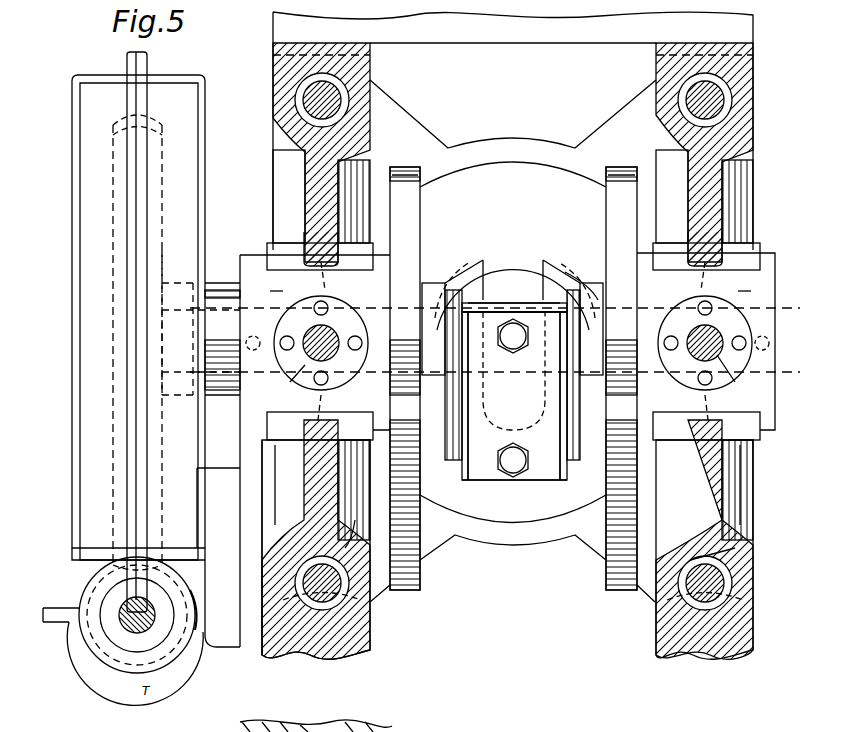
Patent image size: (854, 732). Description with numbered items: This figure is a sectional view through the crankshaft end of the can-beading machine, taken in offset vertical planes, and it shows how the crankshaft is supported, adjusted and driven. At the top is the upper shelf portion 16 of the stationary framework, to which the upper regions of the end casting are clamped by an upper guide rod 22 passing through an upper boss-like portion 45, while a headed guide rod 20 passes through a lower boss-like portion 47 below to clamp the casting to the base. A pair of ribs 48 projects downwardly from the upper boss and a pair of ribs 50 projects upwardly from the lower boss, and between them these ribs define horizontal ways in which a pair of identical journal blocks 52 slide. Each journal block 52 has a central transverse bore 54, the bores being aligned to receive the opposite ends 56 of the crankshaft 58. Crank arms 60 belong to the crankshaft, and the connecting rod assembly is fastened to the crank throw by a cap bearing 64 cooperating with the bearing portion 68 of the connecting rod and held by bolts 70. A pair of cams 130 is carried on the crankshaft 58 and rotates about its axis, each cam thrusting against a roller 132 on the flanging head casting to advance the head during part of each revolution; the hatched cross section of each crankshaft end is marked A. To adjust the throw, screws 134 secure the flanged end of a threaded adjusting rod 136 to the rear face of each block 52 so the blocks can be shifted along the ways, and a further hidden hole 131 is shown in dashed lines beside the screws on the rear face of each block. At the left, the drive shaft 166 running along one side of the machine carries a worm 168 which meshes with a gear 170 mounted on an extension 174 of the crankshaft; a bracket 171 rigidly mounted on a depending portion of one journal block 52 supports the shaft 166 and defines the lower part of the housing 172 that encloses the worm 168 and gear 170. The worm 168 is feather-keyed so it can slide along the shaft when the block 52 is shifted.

The upper shelf portion 16 is at (686, 36).
The headed guide rod 20 is at (750, 562).
The upper guide rod 22 is at (722, 97).
The upper boss-like portion 45 is at (360, 120).
The lower boss-like portion 47 is at (354, 524).
The rib 48 is at (335, 178).
The rib 50 is at (318, 470).
The journal block 52 is at (395, 268).
The central transverse bore 54 is at (240, 300).
The crankshaft end 56 is at (435, 263).
The crankshaft 58 is at (470, 292).
The crank arm 60 is at (590, 310).
The cap bearing 64 is at (478, 472).
The bearing portion 68 is at (520, 308).
The bolt 70 is at (510, 345).
The cam 130 is at (405, 178).
The hidden bolt hole 131 is at (253, 347).
The roller 132 is at (428, 283).
The screw 134 is at (287, 343).
The threaded adjusting rod 136 is at (512, 375).
The drive shaft 166 is at (127, 628).
The worm 168 is at (150, 690).
The gear 170 is at (113, 462).
The bracket 171 is at (186, 660).
The housing 172 is at (205, 188).
The crankshaft extension 174 is at (205, 275).
The axis A is at (510, 282).